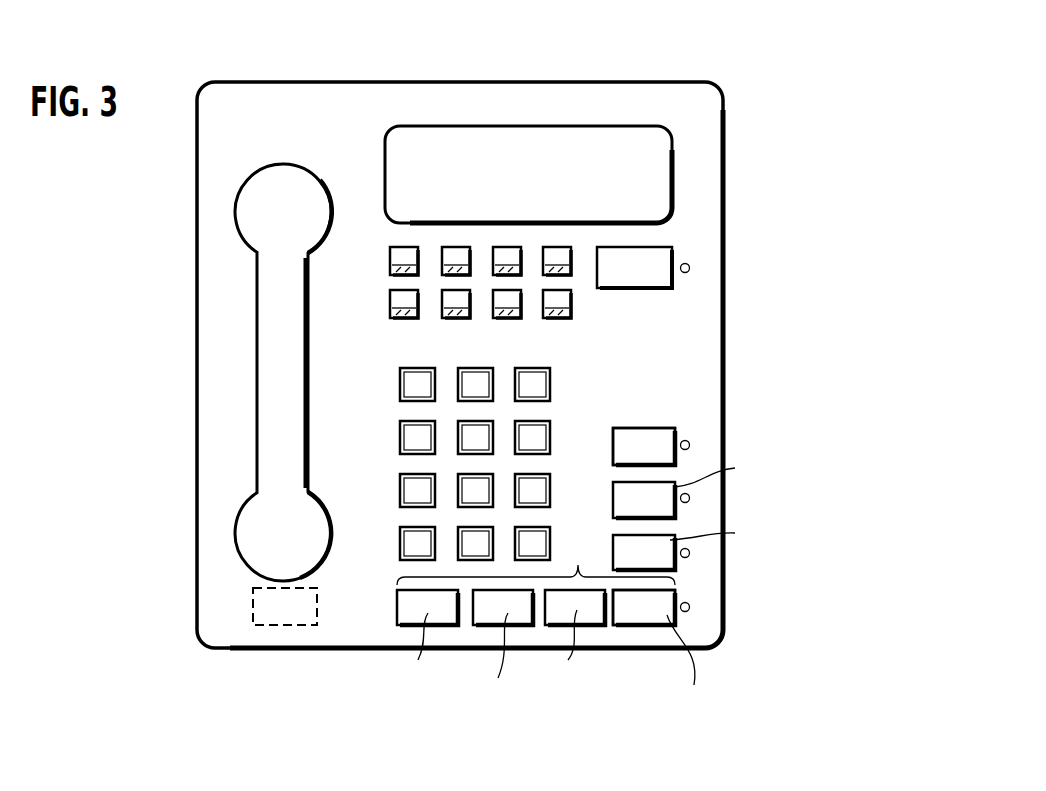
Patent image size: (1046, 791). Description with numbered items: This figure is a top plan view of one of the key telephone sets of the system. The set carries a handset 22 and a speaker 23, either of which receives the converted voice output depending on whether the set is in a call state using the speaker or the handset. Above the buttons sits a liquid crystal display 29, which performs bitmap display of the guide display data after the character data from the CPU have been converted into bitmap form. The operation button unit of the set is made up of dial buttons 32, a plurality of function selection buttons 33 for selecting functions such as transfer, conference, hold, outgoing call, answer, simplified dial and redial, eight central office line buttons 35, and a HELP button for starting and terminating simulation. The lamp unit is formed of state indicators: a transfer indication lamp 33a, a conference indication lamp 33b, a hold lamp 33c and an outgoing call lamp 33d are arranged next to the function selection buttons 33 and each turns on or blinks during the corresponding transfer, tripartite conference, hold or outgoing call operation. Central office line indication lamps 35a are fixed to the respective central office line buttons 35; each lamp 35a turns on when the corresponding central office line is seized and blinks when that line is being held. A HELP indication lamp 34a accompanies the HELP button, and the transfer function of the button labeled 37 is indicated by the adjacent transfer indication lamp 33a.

The handset 22 is at (292, 187).
The speaker 23 is at (292, 613).
The liquid crystal display 29 is at (570, 140).
The dial buttons 32 is at (383, 440).
The function selection buttons 33 is at (592, 640).
The transfer indication lamp 33a is at (690, 445).
The conference indication lamp 33b is at (690, 498).
The hold lamp 33c is at (690, 553).
The outgoing call lamp 33d is at (690, 607).
The HELP indication lamp 34a is at (690, 266).
The central office line buttons 35 is at (491, 302).
The central office line indication lamps 35a is at (402, 318).
The transfer key lamp 37 is at (675, 433).